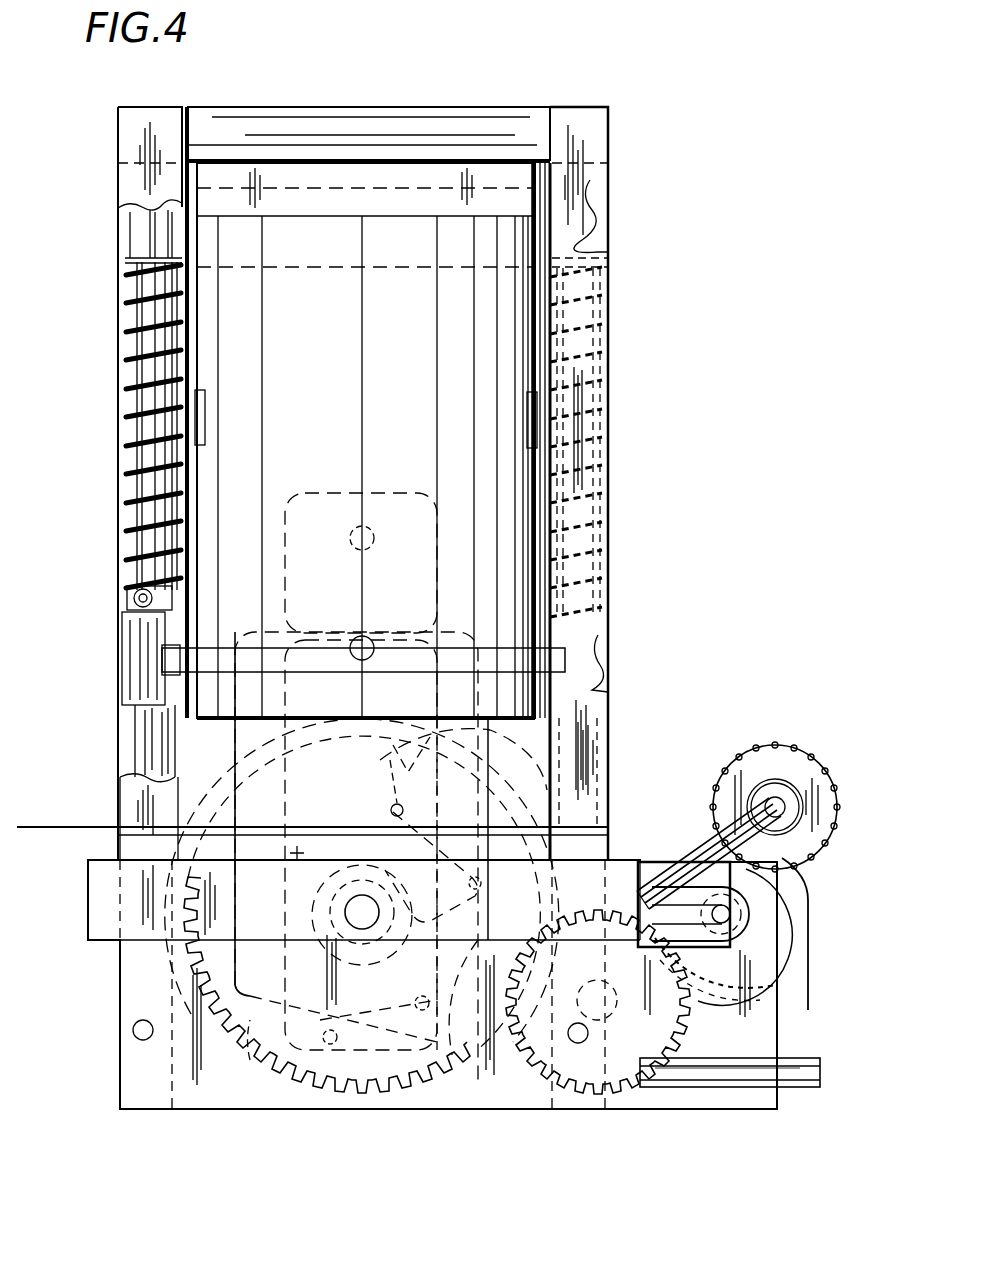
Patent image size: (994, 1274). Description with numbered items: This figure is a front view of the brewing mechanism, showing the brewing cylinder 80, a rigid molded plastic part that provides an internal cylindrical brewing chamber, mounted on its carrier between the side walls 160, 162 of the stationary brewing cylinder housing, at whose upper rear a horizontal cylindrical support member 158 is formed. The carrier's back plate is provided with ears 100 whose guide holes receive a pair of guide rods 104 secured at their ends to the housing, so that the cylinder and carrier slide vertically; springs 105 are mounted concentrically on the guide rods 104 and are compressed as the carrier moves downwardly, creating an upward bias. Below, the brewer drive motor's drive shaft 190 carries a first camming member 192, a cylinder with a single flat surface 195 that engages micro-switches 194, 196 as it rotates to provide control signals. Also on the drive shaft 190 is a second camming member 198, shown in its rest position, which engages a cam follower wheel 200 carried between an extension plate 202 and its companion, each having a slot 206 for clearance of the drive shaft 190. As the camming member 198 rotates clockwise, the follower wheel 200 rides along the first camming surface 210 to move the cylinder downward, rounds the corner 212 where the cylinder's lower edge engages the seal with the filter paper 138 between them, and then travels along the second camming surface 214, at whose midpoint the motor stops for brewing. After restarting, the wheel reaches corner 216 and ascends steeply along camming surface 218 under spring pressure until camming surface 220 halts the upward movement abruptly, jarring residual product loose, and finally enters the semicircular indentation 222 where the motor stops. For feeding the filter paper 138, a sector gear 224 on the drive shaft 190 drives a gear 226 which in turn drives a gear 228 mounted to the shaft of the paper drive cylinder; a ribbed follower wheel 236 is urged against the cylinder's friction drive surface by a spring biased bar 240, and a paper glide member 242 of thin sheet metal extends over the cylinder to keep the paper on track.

The brewing cylinder 80 is at (340, 420).
The ears 100 is at (610, 212).
The guide rods 104 is at (125, 428).
The springs 105 is at (122, 355).
The filter paper 138 is at (68, 825).
The horizontal cylindrical support member 158 is at (385, 130).
The side wall 160 is at (580, 120).
The side wall 162 is at (145, 125).
The drive shaft 190 is at (330, 905).
The first camming member 192 is at (296, 853).
The micro-switch 194 is at (590, 784).
The flat surface 195 is at (378, 895).
The micro-switch 196 is at (432, 1110).
The second camming member 198 is at (397, 672).
The cam follower wheel 200 is at (352, 1103).
The extension plate 202 is at (306, 742).
The slot 206 is at (245, 735).
The first camming surface 210 is at (460, 1055).
The corner 212 is at (660, 934).
The second camming surface 214 is at (523, 817).
The corner 216 is at (478, 728).
The camming surface 218 is at (428, 738).
The camming surface 220 is at (300, 752).
The semicircular indentation 222 is at (392, 806).
The sector gear 224 is at (250, 1060).
The gear 226 is at (592, 1110).
The gear 228 is at (783, 1008).
The ribbed follower wheel 236 is at (772, 757).
The spring biased bar 240 is at (800, 850).
The paper glide member 242 is at (662, 808).